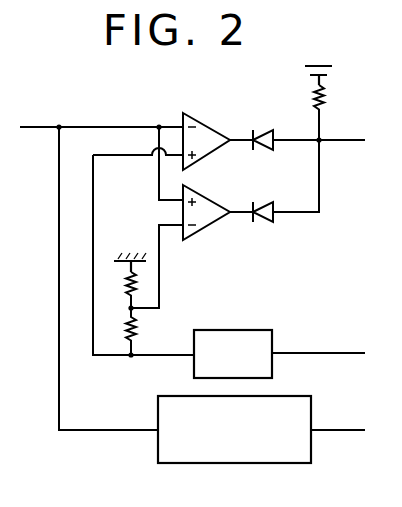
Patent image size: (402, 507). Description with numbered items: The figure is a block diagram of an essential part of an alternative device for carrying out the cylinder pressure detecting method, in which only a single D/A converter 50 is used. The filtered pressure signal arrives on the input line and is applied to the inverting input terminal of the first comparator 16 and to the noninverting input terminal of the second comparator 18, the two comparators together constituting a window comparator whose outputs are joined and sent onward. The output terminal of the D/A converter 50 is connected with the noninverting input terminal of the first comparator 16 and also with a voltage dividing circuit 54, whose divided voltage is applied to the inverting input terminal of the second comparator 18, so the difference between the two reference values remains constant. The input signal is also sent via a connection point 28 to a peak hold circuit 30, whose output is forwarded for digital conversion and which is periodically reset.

The connection point 28 is at (59, 127).
The first comparator 16 is at (205, 121).
The second comparator 18 is at (211, 198).
The voltage dividing circuit 54 is at (157, 312).
The D/A converter 50 is at (272, 330).
The peak hold circuit 30 is at (311, 397).